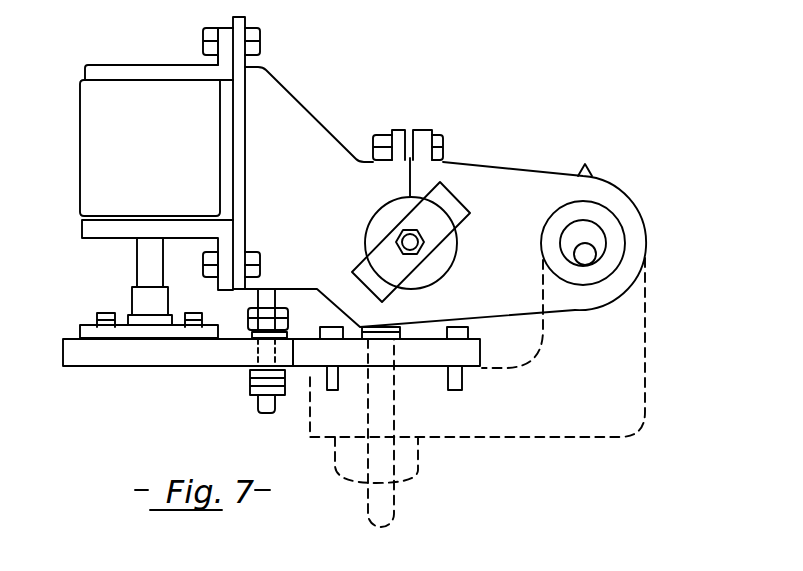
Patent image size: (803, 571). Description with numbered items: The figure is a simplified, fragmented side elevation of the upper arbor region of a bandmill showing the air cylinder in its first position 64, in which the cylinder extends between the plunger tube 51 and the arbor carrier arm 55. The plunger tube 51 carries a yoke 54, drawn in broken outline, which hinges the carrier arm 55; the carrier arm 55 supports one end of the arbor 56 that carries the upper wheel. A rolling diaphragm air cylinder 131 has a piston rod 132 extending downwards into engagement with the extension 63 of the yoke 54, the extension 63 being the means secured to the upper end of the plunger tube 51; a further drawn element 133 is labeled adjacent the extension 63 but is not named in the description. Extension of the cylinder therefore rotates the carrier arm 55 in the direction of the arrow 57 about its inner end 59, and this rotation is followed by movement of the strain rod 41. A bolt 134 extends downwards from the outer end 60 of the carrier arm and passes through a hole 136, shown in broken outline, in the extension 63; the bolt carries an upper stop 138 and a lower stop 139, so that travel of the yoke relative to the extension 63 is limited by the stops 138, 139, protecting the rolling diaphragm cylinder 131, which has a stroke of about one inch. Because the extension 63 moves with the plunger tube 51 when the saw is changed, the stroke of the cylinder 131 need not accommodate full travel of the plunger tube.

The strain rod 41 is at (394, 505).
The plunger tube 51 is at (345, 450).
The yoke 54 is at (572, 409).
The carrier arm 55 is at (335, 207).
The arbor 56 is at (428, 240).
The arrow 57 is at (65, 123).
The inner end of carrier arm 59 is at (586, 250).
The outer end of carrier arm 60 is at (246, 143).
The extension of yoke 63 is at (103, 355).
The first position of air cylinder 64 is at (77, 200).
The rolling diaphragm air cylinder 131 is at (128, 157).
The piston rod 132 is at (140, 262).
The plate 133 is at (203, 389).
The bolt 134 is at (258, 415).
The hole 136 is at (257, 350).
The upper stop 138 is at (252, 319).
The lower stop 139 is at (249, 381).